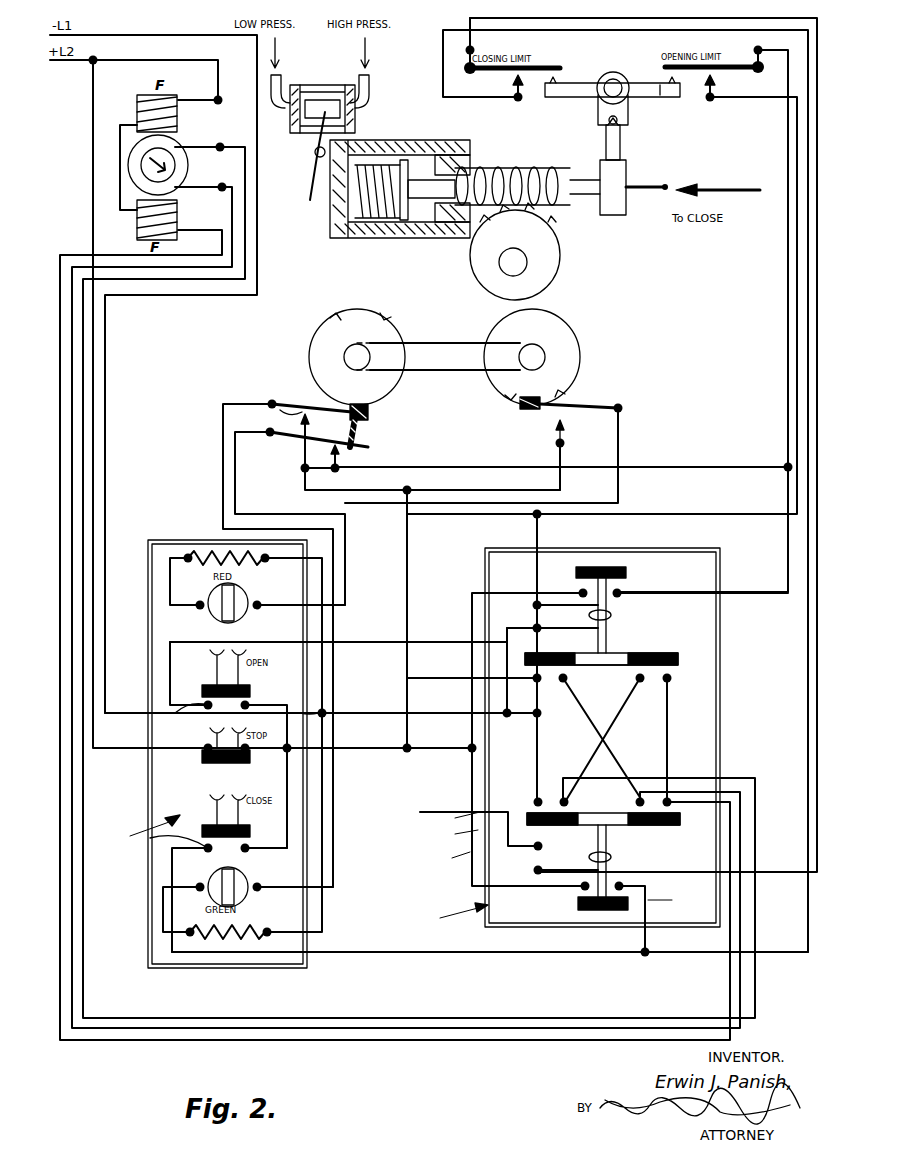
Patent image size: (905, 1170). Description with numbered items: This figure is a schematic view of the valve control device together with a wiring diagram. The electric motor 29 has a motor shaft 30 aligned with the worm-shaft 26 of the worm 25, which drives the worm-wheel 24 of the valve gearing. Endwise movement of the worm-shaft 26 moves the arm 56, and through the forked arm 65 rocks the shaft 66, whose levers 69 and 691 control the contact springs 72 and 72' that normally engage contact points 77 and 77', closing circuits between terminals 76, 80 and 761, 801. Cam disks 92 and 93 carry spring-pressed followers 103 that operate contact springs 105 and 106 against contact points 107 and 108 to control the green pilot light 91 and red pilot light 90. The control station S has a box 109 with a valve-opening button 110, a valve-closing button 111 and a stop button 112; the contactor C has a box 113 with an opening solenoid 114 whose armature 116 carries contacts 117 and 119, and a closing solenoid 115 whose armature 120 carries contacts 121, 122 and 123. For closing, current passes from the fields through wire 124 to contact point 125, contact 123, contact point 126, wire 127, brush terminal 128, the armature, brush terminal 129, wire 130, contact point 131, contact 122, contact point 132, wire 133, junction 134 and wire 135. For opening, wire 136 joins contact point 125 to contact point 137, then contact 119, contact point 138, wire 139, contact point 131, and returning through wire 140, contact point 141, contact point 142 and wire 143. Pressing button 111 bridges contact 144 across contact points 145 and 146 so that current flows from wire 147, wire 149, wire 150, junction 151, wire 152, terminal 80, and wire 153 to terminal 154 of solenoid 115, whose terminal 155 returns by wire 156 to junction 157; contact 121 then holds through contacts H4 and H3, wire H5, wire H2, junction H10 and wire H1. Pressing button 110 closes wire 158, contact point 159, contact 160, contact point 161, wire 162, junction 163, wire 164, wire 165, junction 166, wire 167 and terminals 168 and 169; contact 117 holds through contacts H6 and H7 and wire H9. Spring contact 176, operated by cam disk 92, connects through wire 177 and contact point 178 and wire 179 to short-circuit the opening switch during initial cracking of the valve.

The worm-wheel 24 is at (560, 250).
The worm 25 is at (500, 175).
The worm-shaft 26 is at (585, 200).
The electric motor 29 is at (138, 172).
The motor shaft 30 is at (176, 165).
The arm 56 is at (620, 150).
The forked arm 65 is at (628, 112).
The shaft 66 is at (613, 80).
The lever 69 is at (567, 97).
The lever 691 is at (678, 96).
The contact spring 72 is at (511, 77).
The contact spring 72' is at (722, 78).
The wire terminal 76 is at (475, 50).
The wire terminal 761 is at (710, 102).
The contact point 77 is at (496, 102).
The contact point 77' is at (722, 86).
The wire terminal 80 is at (518, 100).
The wire terminal 801 is at (755, 50).
The pilot light 90 is at (240, 598).
The pilot light 91 is at (240, 895).
The cam disk 92 is at (395, 322).
The cam disk 93 is at (572, 322).
The spring-pressed follower 103 is at (368, 416).
The contact spring 105 is at (332, 412).
The contact spring 106 is at (598, 402).
The contact point 107 is at (300, 400).
The contact point 108 is at (564, 433).
The box 109 is at (139, 822).
The valve-opening button 110 is at (210, 656).
The valve-closing button 111 is at (210, 797).
The stop button 112 is at (210, 733).
The box 113 is at (446, 912).
The solenoid 114 is at (612, 614).
The solenoid 115 is at (612, 856).
The armature 116 is at (620, 652).
The contact 117 is at (576, 576).
The contact 119 is at (680, 658).
The armature 120 is at (608, 832).
The contact 121 is at (578, 906).
The contact 122 is at (449, 834).
The contact 123 is at (680, 812).
The wire 124 is at (62, 255).
The contact point 125 is at (670, 798).
The contact point 126 is at (636, 803).
The wire 127 is at (180, 300).
The brush terminal 128 is at (222, 190).
The brush terminal 129 is at (220, 145).
The wire 130 is at (245, 230).
The contact point 131 is at (568, 802).
The contact point 132 is at (450, 816).
The wire 133 is at (595, 740).
The junction 134 is at (540, 770).
The wire 135 is at (257, 188).
The wire 136 is at (668, 718).
The contact point 137 is at (670, 681).
The contact point 138 is at (568, 680).
The wire 139 is at (608, 742).
The wire 140 is at (638, 680).
The contact point 141 is at (601, 659).
The contact point 142 is at (470, 679).
The wire 143 is at (540, 698).
The contact 144 is at (150, 838).
The contact point 145 is at (262, 872).
The contact point 146 is at (285, 752).
The wire 147 is at (93, 100).
The wire 149 is at (290, 815).
The wire 150 is at (452, 952).
The junction 151 is at (645, 955).
The wire 152 is at (633, 30).
The wire 153 is at (605, 20).
The terminal 154 is at (536, 872).
The terminal 155 is at (543, 837).
The wire 156 is at (470, 812).
The junction 157 is at (470, 715).
The wire 158 is at (305, 713).
The contact point 159 is at (248, 702).
The contact 160 is at (150, 713).
The contact point 161 is at (205, 703).
The wire 162 is at (765, 592).
The junction 163 is at (786, 470).
The wire 164 is at (788, 135).
The wire 165 is at (797, 244).
The junction 166 is at (540, 518).
The wire 167 is at (532, 578).
The terminal 168 is at (535, 606).
The terminal 169 is at (540, 630).
The spring contact 176 is at (285, 448).
The wire 177 is at (268, 512).
The contact point 178 is at (345, 452).
The wire 179 is at (680, 467).
The contactor C is at (700, 580).
The control station S is at (178, 540).
The wire H1 is at (405, 750).
The wire H2 is at (449, 859).
The contact H3 is at (582, 888).
The contact H4 is at (624, 887).
The wire H5 is at (671, 908).
The contact H6 is at (620, 592).
The contact H7 is at (580, 592).
The wire H9 is at (470, 612).
The junction H10 is at (470, 752).